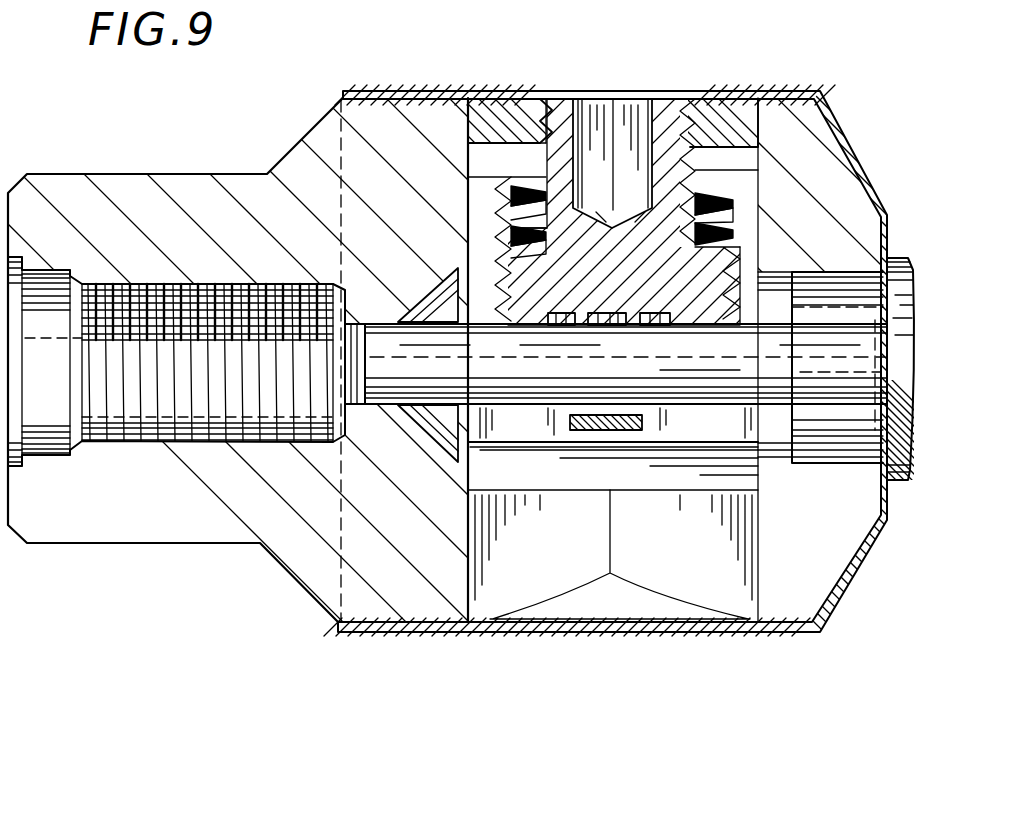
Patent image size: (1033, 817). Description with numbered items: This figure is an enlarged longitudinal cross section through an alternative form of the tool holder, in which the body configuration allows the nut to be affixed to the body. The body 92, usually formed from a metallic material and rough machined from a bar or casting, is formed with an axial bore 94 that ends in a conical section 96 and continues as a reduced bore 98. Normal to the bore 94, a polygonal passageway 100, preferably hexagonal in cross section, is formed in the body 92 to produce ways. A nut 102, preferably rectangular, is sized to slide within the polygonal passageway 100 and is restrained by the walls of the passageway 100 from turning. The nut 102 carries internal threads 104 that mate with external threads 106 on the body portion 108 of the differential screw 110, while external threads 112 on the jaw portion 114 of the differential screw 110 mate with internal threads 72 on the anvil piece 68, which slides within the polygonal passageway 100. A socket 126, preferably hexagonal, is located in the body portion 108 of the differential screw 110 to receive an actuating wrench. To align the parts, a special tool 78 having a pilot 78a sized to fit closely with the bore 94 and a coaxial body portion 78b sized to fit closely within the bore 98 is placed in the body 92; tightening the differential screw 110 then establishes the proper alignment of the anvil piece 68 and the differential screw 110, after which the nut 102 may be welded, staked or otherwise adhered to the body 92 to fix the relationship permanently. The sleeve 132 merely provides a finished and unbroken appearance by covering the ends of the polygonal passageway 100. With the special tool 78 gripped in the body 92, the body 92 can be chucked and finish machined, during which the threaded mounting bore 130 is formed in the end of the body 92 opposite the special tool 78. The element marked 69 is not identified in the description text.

The body 92 is at (288, 154).
The sleeve 132 is at (367, 90).
The threaded mounting bore 130 is at (212, 438).
The reduced bore 98 is at (370, 333).
The conical section 96 is at (428, 306).
The coaxial body portion 78b is at (397, 407).
The nut 102 is at (496, 110).
The internal threads 104 is at (577, 147).
The external threads 106 is at (545, 166).
The internal threads 72 is at (506, 193).
The anvil piece 68 is at (492, 251).
The socket 126 is at (578, 140).
The jaw portion 114 is at (624, 284).
The body portion 108 is at (661, 140).
The differential screw 110 is at (660, 107).
The external threads 112 is at (743, 268).
The axial bore 94 is at (800, 286).
The special tool 78 is at (893, 257).
The pilot 78a is at (830, 466).
The pin 69 is at (616, 433).
The polygonal passageway 100 is at (534, 590).